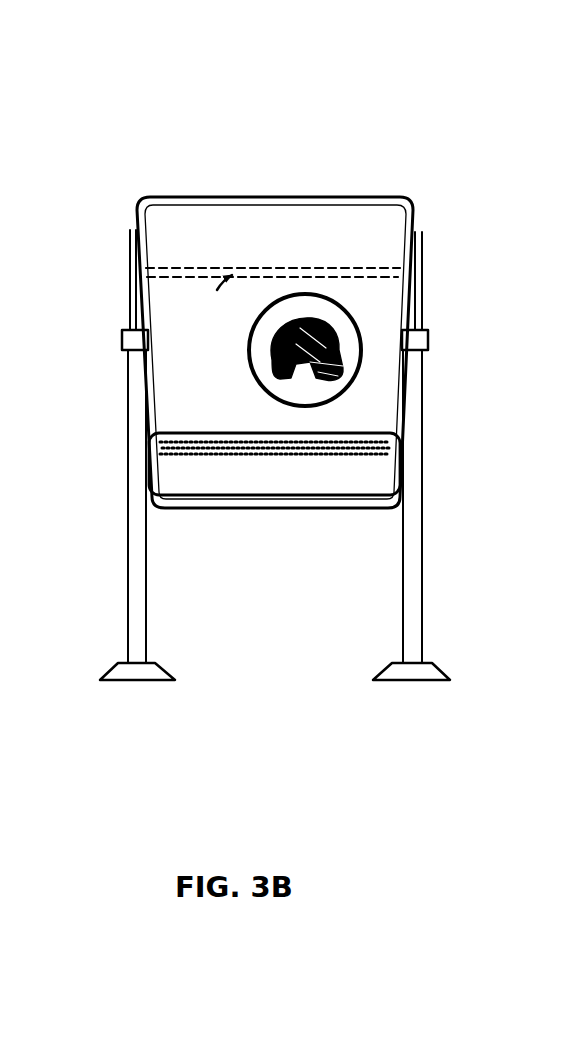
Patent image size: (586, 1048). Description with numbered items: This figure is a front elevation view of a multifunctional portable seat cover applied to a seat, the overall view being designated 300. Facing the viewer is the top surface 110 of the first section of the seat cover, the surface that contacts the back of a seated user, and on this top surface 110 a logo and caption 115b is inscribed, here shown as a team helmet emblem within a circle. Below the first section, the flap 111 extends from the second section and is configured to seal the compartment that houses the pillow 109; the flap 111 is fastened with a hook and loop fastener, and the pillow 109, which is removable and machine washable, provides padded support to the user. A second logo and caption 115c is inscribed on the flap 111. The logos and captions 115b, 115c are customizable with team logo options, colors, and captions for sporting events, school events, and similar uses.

The display sign assembly 300 is at (113, 105).
The top surface 110 is at (327, 235).
The logo and caption 115b is at (249, 371).
The pillow 109 is at (210, 436).
The flap 111 is at (163, 473).
The logo and caption 115c is at (190, 484).